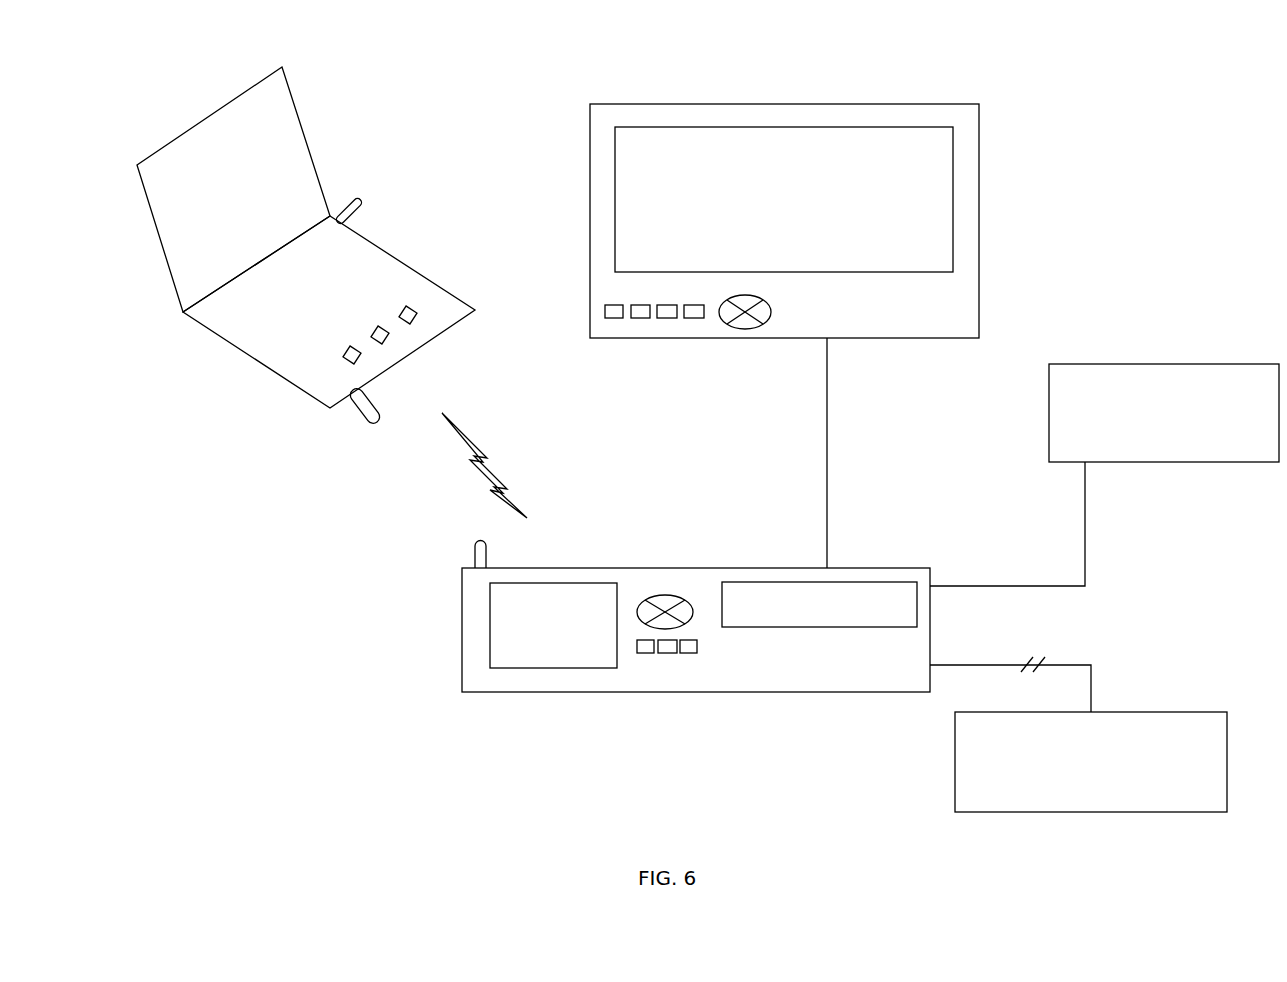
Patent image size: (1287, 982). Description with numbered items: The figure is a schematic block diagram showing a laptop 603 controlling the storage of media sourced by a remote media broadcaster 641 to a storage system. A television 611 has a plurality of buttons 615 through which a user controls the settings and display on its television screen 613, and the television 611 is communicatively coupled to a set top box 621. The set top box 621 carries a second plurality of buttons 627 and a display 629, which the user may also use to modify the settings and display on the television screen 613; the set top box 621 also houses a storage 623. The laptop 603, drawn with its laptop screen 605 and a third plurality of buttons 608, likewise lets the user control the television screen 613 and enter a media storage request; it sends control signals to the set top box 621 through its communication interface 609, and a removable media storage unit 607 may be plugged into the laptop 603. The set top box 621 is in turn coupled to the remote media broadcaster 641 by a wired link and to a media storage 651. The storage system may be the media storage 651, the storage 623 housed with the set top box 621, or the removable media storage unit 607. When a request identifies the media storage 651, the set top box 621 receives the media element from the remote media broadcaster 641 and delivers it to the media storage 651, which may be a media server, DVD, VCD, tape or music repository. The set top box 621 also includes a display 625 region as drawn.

The laptop 603 is at (341, 326).
The laptop screen 605 is at (292, 218).
The removable media storage unit 607 is at (356, 425).
The third plurality of buttons 608 is at (424, 320).
The communication interface 609 is at (368, 203).
The television 611 is at (968, 321).
The television screen 613 is at (764, 223).
The plurality of buttons 615 is at (613, 324).
The set top box 621 is at (918, 675).
The storage 623 is at (885, 616).
The display 625 is at (534, 650).
The second plurality of buttons 627 is at (677, 586).
The display 629 is at (472, 553).
The remote media broadcaster 641 is at (1178, 784).
The media storage 651 is at (1262, 422).